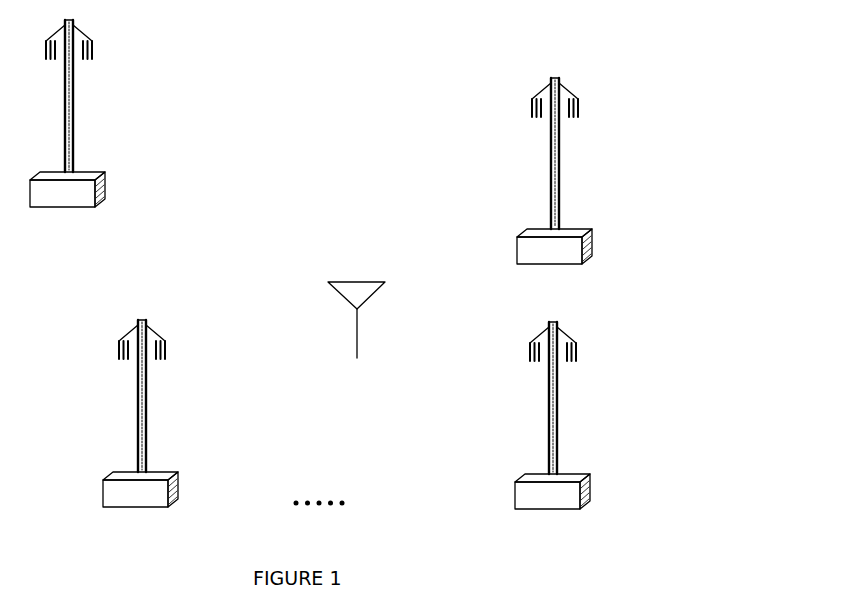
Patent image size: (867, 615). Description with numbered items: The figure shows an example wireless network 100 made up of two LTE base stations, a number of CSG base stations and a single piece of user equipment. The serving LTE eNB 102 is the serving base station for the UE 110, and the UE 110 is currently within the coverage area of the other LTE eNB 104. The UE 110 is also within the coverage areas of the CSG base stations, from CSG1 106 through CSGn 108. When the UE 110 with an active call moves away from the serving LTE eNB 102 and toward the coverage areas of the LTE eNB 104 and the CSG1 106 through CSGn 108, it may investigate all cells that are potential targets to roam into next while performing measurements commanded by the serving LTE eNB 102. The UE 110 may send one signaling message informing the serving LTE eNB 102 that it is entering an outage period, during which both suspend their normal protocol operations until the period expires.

The wireless network 100 is at (690, 75).
The serving LTE eNB 102 is at (105, 197).
The LTE eNB 104 is at (591, 233).
The CSG1 base station 106 is at (178, 476).
The CSGn base station 108 is at (590, 478).
The UE 110 is at (342, 282).